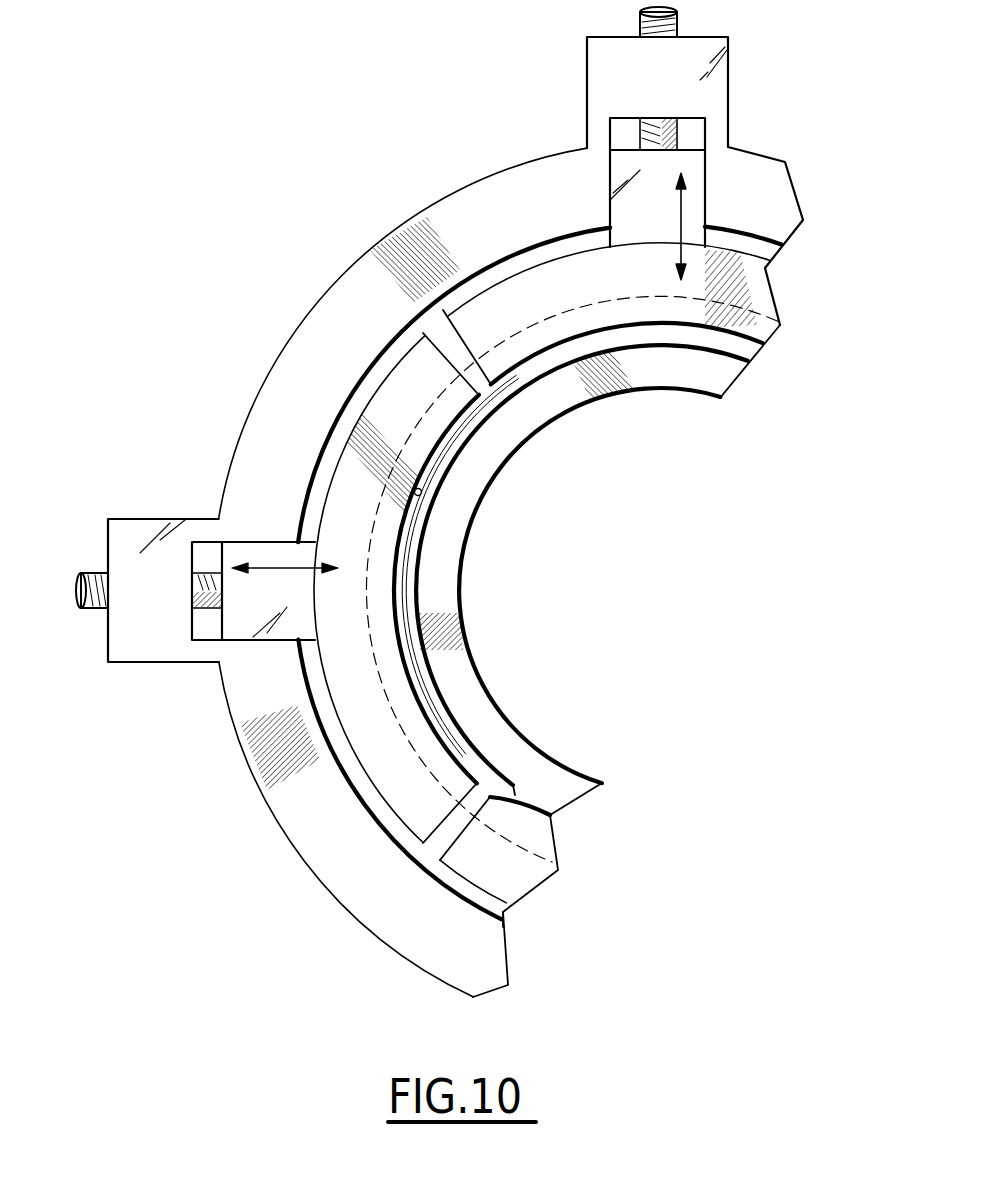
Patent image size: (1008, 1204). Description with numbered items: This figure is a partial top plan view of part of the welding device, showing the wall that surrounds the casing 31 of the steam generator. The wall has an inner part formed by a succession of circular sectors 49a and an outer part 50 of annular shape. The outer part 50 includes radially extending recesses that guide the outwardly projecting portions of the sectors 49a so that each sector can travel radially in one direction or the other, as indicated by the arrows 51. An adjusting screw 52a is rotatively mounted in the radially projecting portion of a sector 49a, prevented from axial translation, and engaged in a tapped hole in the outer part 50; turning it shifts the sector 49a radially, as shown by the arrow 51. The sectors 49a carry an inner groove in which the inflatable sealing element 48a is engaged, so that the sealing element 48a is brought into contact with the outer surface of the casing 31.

The casing 31 is at (507, 790).
The sealing element 48a is at (467, 367).
The circular sectors 49a is at (553, 287).
The outer part 50 is at (363, 312).
The arrows 51 is at (683, 223).
The adjusting screw 52a is at (90, 587).